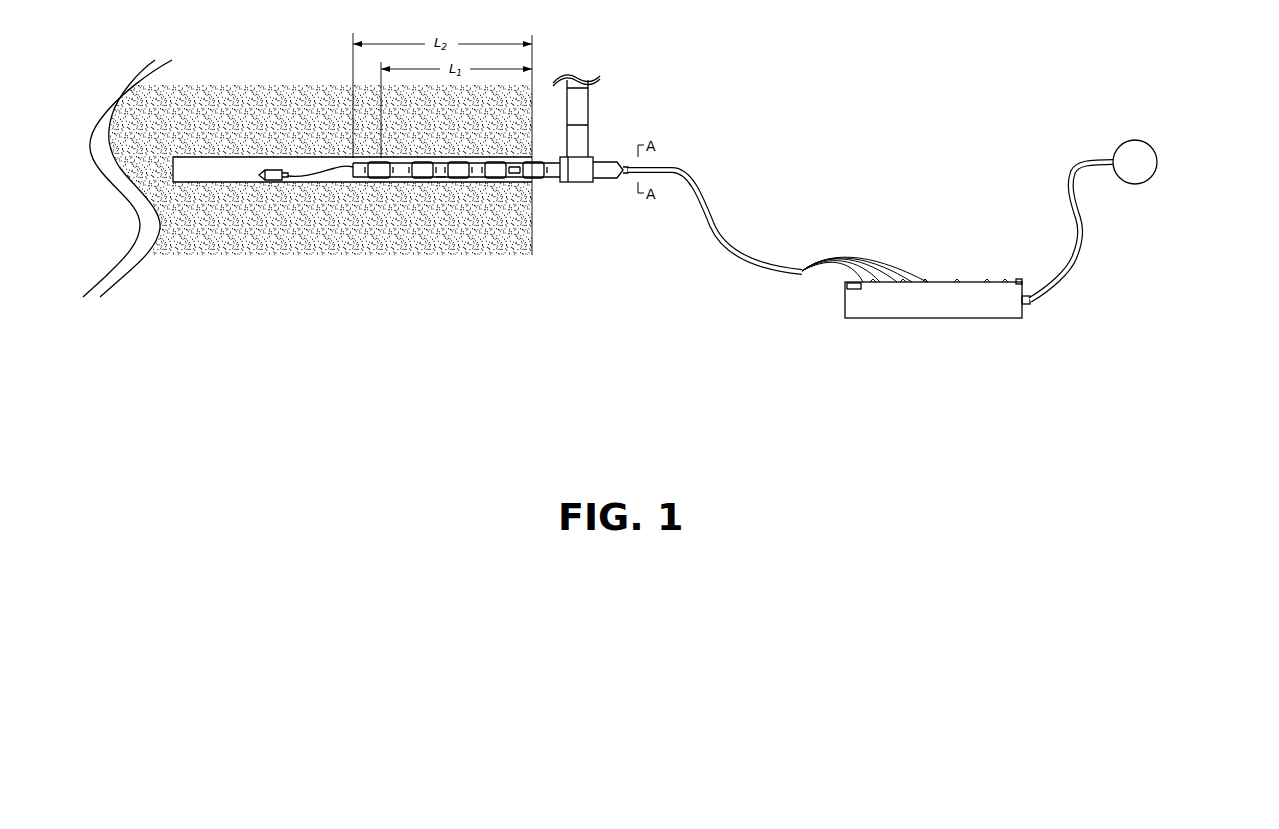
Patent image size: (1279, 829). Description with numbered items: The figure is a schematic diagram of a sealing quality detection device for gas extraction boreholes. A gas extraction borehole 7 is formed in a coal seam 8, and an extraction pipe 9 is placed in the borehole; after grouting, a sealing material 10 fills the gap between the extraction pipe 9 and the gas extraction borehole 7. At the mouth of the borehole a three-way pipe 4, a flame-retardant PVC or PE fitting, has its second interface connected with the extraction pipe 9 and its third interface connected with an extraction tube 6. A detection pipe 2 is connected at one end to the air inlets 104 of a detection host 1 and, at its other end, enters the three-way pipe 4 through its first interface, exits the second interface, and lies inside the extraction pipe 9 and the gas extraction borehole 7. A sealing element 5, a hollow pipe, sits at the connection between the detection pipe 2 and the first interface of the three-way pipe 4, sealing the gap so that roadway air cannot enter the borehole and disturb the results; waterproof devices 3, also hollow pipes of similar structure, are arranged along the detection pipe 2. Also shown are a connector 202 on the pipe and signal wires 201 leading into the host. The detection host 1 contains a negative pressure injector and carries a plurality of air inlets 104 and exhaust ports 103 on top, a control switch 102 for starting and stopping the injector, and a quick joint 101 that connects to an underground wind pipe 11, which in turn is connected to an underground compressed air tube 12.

The detection host 1 is at (915, 302).
The quick joint 101 is at (1030, 305).
The control switch 102 is at (1020, 280).
The exhaust ports 103 is at (970, 279).
The air inlets 104 is at (862, 284).
The detection pipe 2 is at (680, 175).
The signal wires 201 is at (866, 256).
The connector 202 is at (513, 175).
The waterproof devices 3 is at (533, 178).
The three-way pipe 4 is at (585, 158).
The sealing element 5 is at (607, 178).
The extraction tube 6 is at (580, 118).
The gas extraction borehole 7 is at (218, 165).
The coal seam 8 is at (192, 105).
The extraction pipe 9 is at (360, 177).
The sealing material 10 is at (444, 184).
The underground wind pipe 11 is at (1087, 228).
The underground compressed air tube 12 is at (1152, 138).